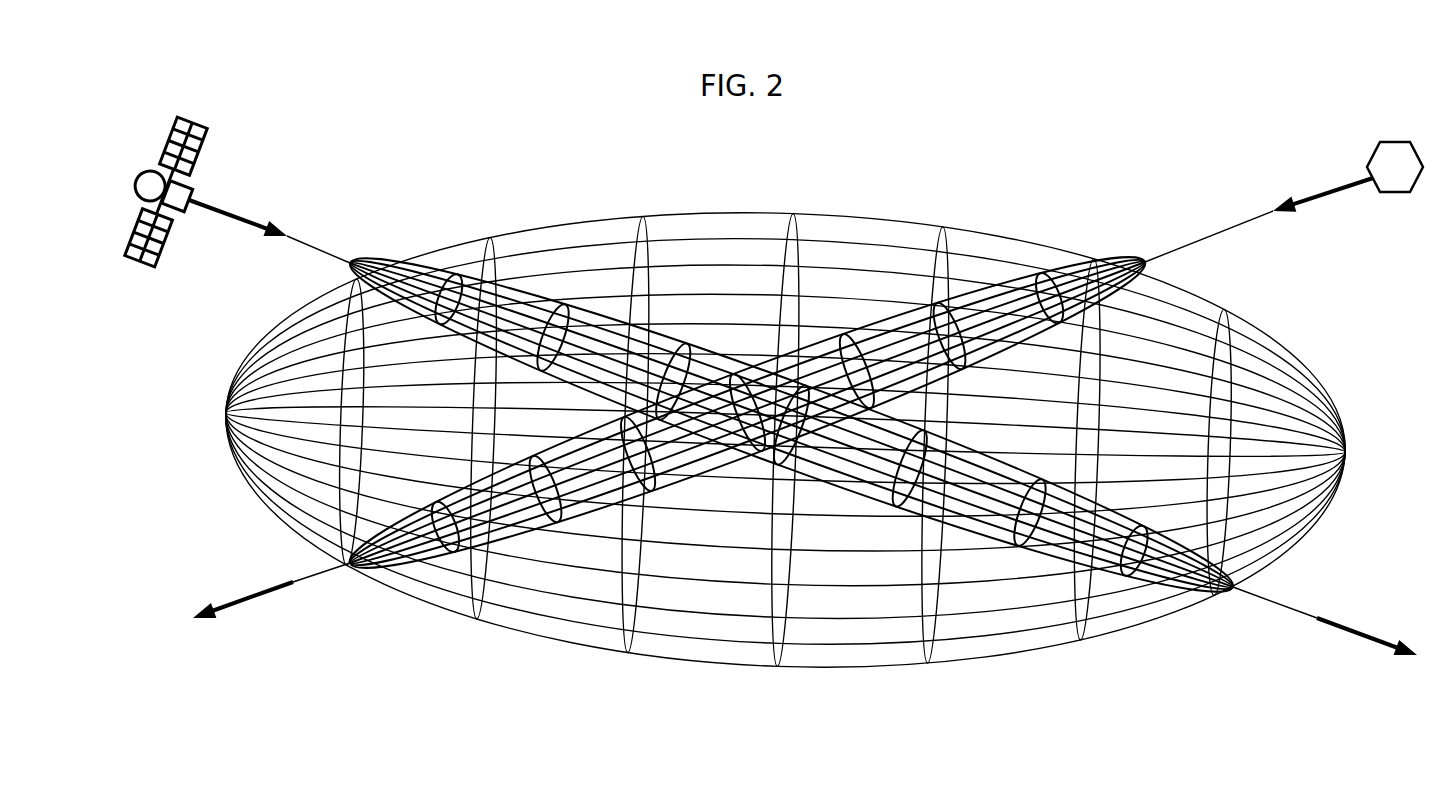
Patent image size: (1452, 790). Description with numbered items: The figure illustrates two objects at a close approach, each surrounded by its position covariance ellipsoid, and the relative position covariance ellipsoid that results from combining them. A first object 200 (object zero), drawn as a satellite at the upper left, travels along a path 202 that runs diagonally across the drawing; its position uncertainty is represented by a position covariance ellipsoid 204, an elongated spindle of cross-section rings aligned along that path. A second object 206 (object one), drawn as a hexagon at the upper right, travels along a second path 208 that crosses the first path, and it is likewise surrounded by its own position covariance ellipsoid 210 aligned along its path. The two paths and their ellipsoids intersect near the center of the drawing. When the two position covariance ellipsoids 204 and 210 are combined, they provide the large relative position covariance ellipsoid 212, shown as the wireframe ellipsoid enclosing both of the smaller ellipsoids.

The object 200 is at (150, 265).
The path 202 is at (300, 241).
The position covariance ellipsoid 204 is at (385, 252).
The object 206 is at (1385, 193).
The path 208 is at (1243, 222).
The position covariance ellipsoid 210 is at (1125, 253).
The relative position covariance ellipsoid 212 is at (693, 210).